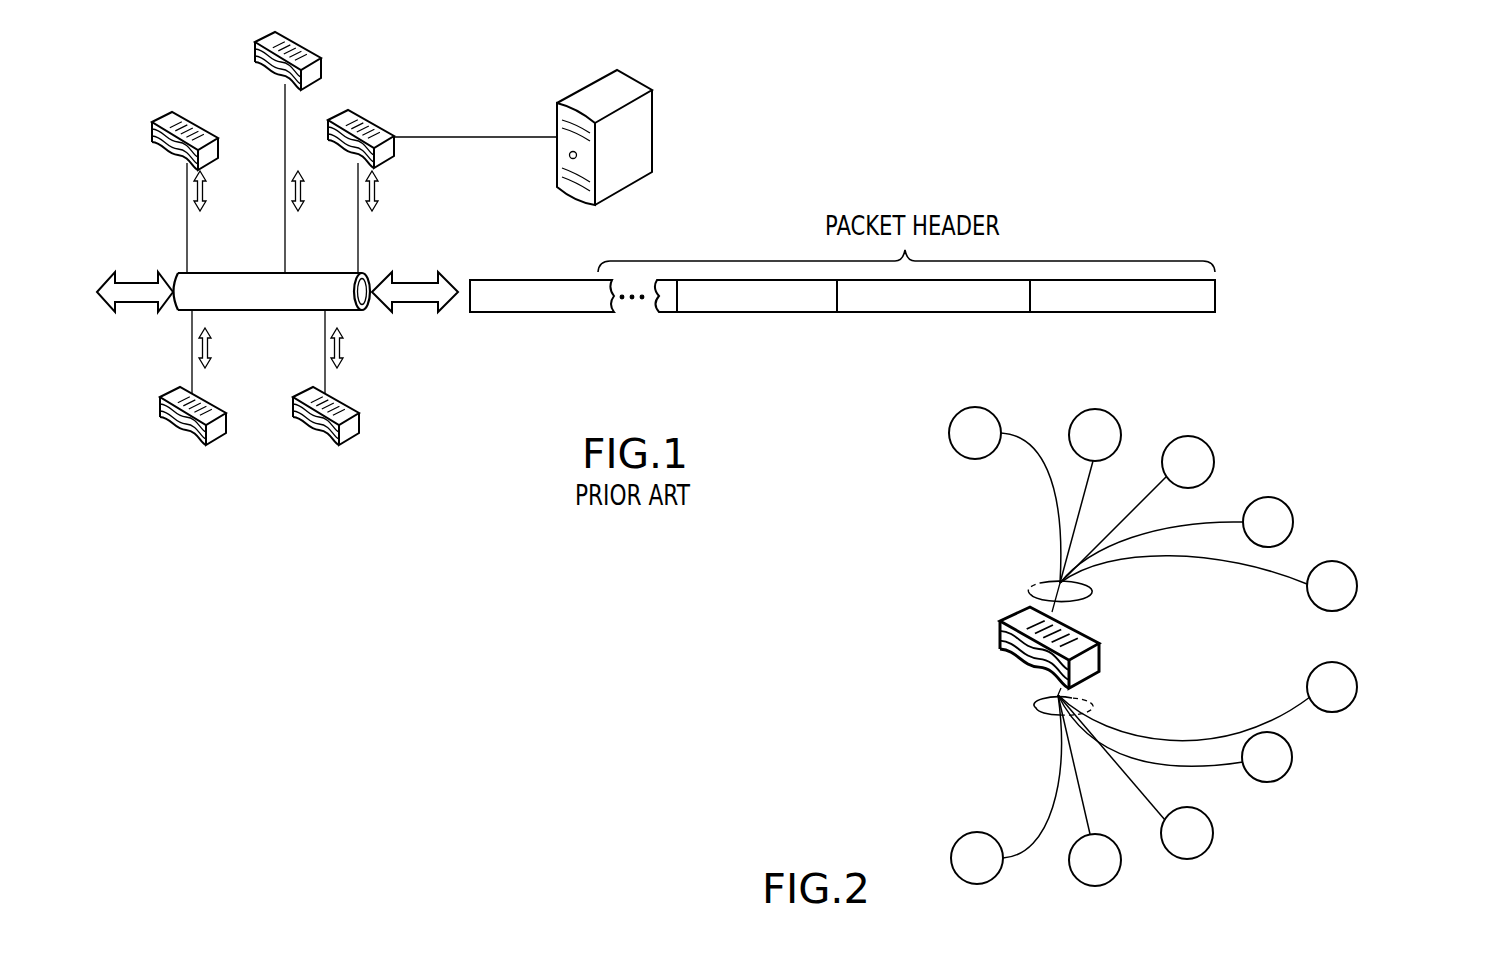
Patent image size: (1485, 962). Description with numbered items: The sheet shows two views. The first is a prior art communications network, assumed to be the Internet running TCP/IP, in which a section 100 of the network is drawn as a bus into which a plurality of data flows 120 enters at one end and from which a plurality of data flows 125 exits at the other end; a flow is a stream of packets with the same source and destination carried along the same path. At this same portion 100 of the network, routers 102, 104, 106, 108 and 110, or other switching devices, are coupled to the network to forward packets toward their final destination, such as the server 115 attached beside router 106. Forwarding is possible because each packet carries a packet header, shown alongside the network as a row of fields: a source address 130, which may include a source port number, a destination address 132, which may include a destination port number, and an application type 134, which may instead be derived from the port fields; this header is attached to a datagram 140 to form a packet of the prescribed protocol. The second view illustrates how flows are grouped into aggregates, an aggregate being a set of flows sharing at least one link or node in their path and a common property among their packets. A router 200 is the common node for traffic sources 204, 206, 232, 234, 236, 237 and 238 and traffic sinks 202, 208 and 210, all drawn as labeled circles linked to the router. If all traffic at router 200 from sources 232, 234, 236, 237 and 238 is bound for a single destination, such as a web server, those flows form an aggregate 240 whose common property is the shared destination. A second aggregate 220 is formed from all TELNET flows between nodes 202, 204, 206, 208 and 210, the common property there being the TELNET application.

In FIG. 1, the section of the network 100 is at (287, 312).
In FIG. 1, the router 102 is at (198, 122).
In FIG. 1, the router 104 is at (320, 60).
In FIG. 1, the router 106 is at (393, 140).
In FIG. 1, the router 108 is at (359, 418).
In FIG. 1, the router 110 is at (226, 423).
In FIG. 1, the server 115 is at (653, 122).
In FIG. 1, the data flows 120 is at (138, 272).
In FIG. 1, the data flows 125 is at (419, 276).
In FIG. 1, the source address 130 is at (1117, 314).
In FIG. 1, the destination address 132 is at (930, 314).
In FIG. 1, the application type 134 is at (760, 314).
In FIG. 1, the datagram 140 is at (543, 314).
In FIG. 2, the router 200 is at (1101, 655).
In FIG. 2, the traffic sink 202 is at (950, 445).
In FIG. 2, the traffic source 204 is at (1118, 420).
In FIG. 2, the traffic source 206 is at (1212, 448).
In FIG. 2, the traffic sink 208 is at (1294, 510).
In FIG. 2, the traffic sink 210 is at (1358, 578).
In FIG. 2, the second aggregate 220 is at (1028, 590).
In FIG. 2, the traffic source 232 is at (1357, 679).
In FIG. 2, the traffic source 234 is at (1290, 773).
In FIG. 2, the traffic source 236 is at (1210, 848).
In FIG. 2, the traffic source 237 is at (1116, 878).
In FIG. 2, the traffic source 238 is at (955, 846).
In FIG. 2, the aggregate 240 is at (1036, 706).